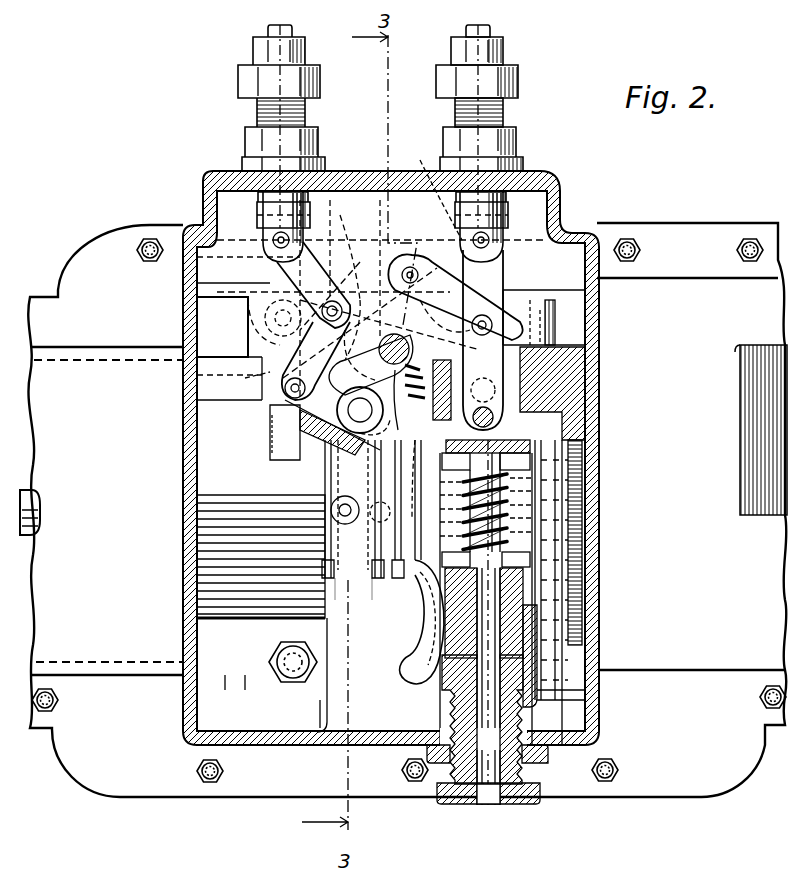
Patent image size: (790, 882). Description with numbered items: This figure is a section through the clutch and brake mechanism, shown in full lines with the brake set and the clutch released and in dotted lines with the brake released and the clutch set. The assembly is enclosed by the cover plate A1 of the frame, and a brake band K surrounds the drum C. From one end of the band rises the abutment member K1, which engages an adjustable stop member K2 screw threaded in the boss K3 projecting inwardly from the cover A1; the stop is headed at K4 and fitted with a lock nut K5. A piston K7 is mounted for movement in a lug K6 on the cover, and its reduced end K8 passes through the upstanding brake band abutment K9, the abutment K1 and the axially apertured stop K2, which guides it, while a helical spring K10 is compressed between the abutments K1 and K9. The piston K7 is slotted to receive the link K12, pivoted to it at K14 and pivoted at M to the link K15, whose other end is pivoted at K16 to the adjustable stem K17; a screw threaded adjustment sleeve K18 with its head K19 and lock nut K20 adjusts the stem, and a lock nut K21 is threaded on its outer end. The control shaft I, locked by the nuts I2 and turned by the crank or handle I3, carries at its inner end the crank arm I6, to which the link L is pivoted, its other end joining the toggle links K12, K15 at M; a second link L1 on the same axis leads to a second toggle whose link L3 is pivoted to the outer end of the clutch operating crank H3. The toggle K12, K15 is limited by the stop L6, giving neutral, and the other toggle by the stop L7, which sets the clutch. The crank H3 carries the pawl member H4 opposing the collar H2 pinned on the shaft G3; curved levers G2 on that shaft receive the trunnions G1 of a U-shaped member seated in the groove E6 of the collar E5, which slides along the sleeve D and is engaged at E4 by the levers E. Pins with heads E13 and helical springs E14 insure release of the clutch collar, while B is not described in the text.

The cover plate A1 is at (665, 235).
The adjusting knob B is at (24, 490).
The drum C is at (563, 667).
The sleeve D is at (406, 509).
The levers E is at (407, 670).
The engagement point of lever with collar E4 is at (268, 30).
The collar E5 is at (372, 580).
The circumferential groove E6 is at (345, 580).
The head E13 is at (409, 399).
The helical spring E14 is at (416, 478).
The pins or trunnions G1 is at (331, 506).
The curved levers G2 is at (400, 480).
The shaft G3 is at (363, 411).
The collar H2 is at (323, 440).
The crank H3 is at (238, 441).
The pawl member H4 is at (270, 418).
The control shaft I is at (486, 322).
The lock nuts I2 is at (292, 278).
The crank or handle I3 is at (248, 380).
The crank arm I6 is at (350, 278).
The brake band K is at (527, 580).
The abutment member K1 is at (530, 557).
The adjustable stop member K2 is at (513, 593).
The boss K3 is at (525, 697).
The head K4 is at (530, 800).
The lock nut K5 is at (547, 753).
The lug K6 is at (547, 387).
The piston K7 is at (532, 443).
The reduced end K8 is at (509, 487).
The brake band abutment K9 is at (530, 463).
The helical spring K10 is at (569, 520).
The link K12 is at (497, 353).
The pivot K14 is at (500, 432).
The link K15 is at (520, 255).
The pivot K16 is at (503, 235).
The adjustable stem K17 is at (492, 32).
The screw threaded adjustment sleeve K18 is at (503, 110).
The head K19 is at (518, 78).
The lock nut K20 is at (518, 138).
The lock nut K21 is at (505, 50).
The link L is at (448, 262).
The second link L1 is at (386, 156).
The link L3 is at (262, 366).
The stop L6 is at (565, 306).
The stop L7 is at (213, 308).
The pivot M is at (470, 350).